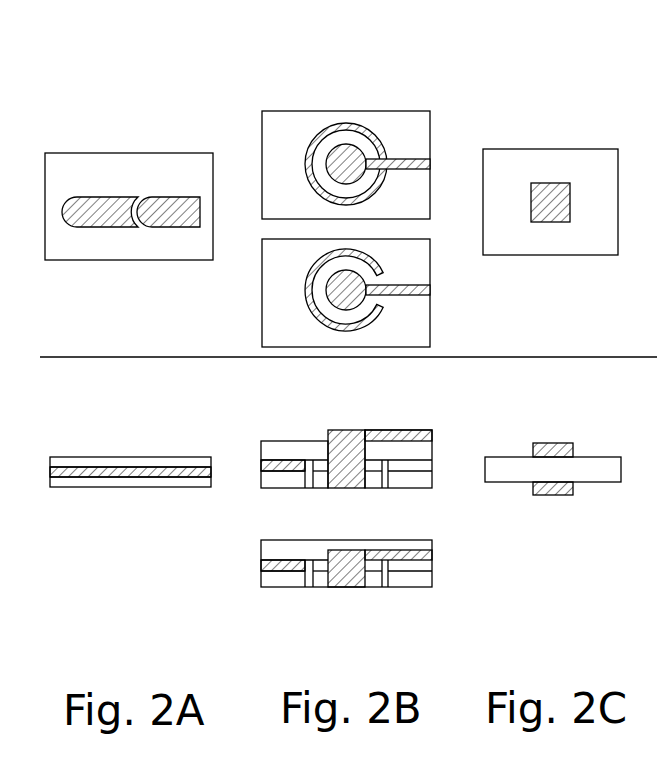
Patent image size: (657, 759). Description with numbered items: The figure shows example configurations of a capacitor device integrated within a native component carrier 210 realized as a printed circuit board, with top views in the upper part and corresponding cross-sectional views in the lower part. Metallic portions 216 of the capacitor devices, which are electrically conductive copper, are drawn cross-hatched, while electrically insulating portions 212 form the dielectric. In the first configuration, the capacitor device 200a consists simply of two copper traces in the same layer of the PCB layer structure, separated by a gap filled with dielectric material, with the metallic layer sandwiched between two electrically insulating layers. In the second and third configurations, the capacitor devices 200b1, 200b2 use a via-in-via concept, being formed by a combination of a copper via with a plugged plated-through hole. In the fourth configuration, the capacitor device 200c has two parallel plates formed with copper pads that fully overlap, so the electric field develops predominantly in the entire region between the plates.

In FIG. 2A, the capacitor device 200a is at (117, 317).
In FIG. 2B, the capacitor device 200b1 is at (302, 111).
In FIG. 2B, the capacitor device 200b2 is at (262, 300).
In FIG. 2C, the capacitor device 200c is at (563, 325).
In FIG. 2A, the component carrier 210 is at (106, 317).
In FIG. 2B, the component carrier 210 is at (324, 347).
In FIG. 2C, the component carrier 210 is at (570, 325).
In FIG. 2A, the electrically insulating portions 212 is at (103, 170).
In FIG. 2B, the electrically insulating portions 212 is at (292, 146).
In FIG. 2C, the electrically insulating portions 212 is at (560, 168).
In FIG. 2A, the metallic portions 216 is at (98, 222).
In FIG. 2B, the metallic portions 216 is at (418, 159).
In FIG. 2C, the metallic portions 216 is at (555, 220).